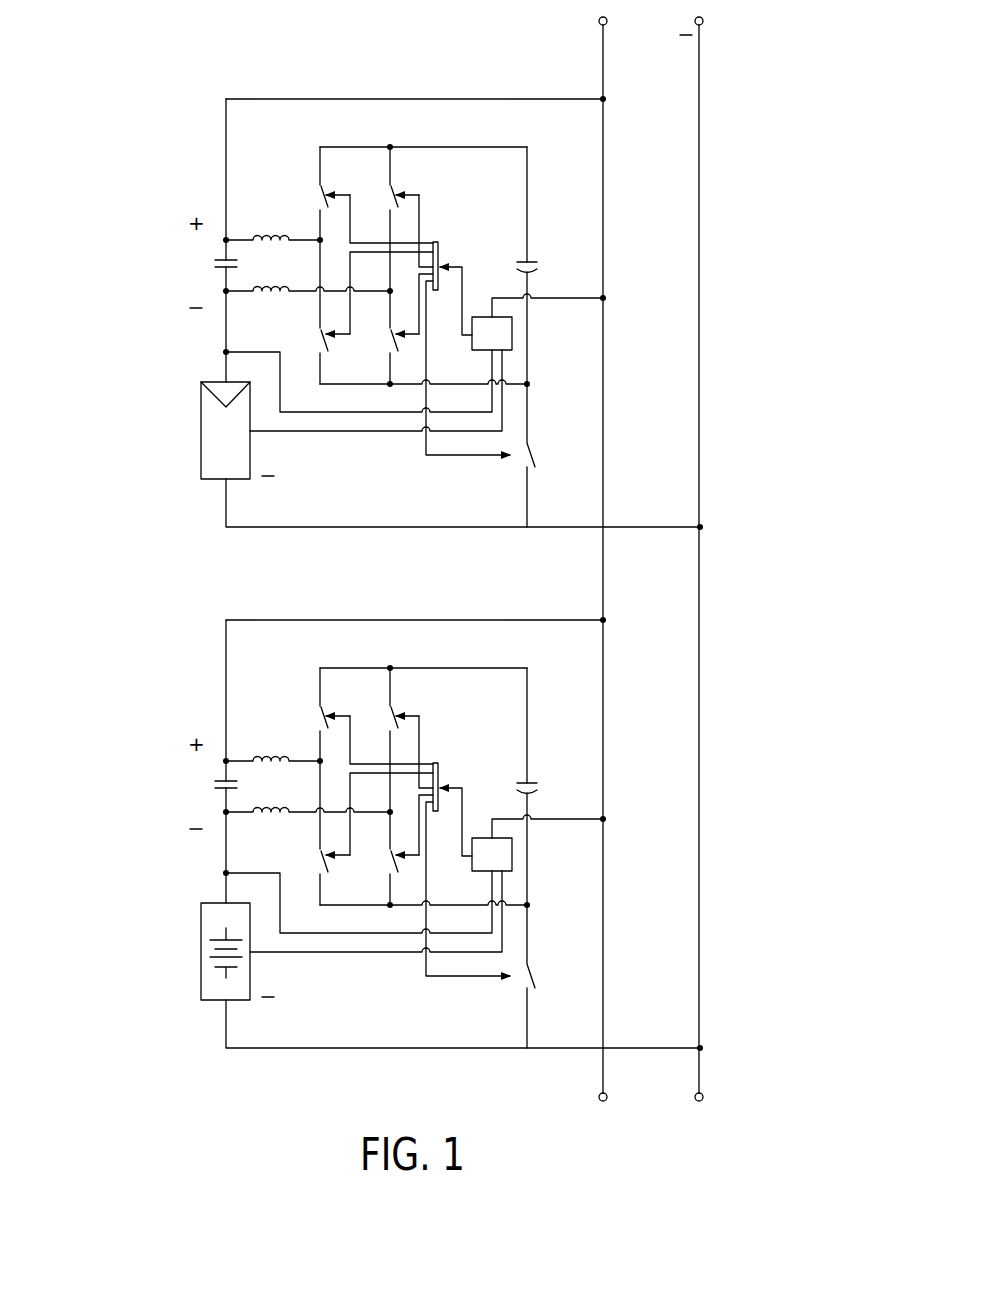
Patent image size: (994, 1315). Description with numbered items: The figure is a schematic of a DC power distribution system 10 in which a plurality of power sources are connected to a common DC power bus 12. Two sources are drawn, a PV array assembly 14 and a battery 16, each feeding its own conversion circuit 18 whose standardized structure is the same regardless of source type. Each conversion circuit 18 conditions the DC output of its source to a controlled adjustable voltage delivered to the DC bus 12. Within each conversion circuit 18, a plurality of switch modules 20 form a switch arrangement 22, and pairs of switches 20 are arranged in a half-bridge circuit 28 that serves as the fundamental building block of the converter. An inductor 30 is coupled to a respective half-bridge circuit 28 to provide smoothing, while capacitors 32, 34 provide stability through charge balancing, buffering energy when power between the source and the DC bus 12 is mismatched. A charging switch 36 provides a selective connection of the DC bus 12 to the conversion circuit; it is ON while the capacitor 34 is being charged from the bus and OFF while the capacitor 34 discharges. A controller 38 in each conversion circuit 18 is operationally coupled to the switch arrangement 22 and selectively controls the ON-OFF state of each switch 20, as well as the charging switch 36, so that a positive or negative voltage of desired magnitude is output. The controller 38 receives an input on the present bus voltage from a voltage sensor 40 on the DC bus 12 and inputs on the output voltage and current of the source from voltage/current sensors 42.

The DC power distribution system 10 is at (128, 78).
The DC power bus 12 is at (742, 170).
The PV array assembly 14 is at (205, 481).
The battery 16 is at (234, 969).
The conversion circuit 18 is at (550, 382).
The switch module 20 is at (324, 185).
The switch arrangement 22 is at (300, 167).
The half-bridge circuit 28 is at (330, 143).
The inductor 30 is at (287, 242).
The capacitor 32 is at (223, 270).
The capacitor 34 is at (531, 258).
The charging switch 36 is at (518, 472).
The controller 38 is at (512, 337).
The voltage sensor 40 is at (604, 298).
The voltage/current sensors 42 is at (224, 353).